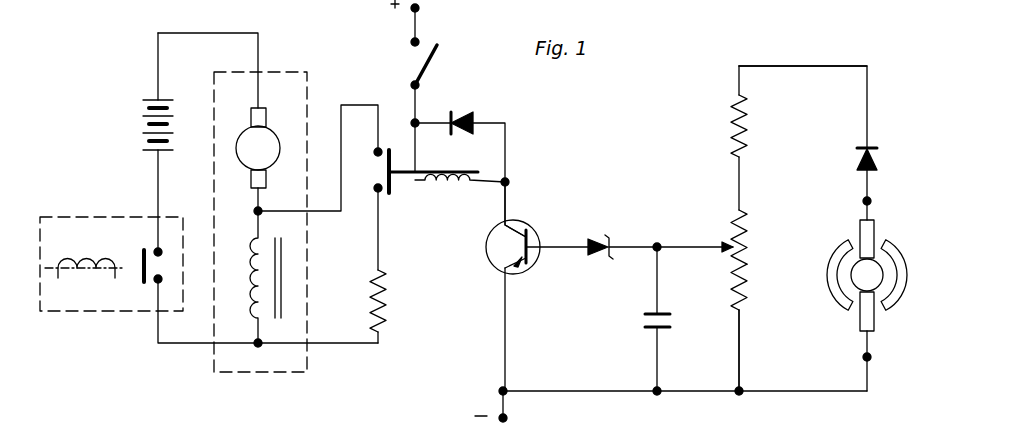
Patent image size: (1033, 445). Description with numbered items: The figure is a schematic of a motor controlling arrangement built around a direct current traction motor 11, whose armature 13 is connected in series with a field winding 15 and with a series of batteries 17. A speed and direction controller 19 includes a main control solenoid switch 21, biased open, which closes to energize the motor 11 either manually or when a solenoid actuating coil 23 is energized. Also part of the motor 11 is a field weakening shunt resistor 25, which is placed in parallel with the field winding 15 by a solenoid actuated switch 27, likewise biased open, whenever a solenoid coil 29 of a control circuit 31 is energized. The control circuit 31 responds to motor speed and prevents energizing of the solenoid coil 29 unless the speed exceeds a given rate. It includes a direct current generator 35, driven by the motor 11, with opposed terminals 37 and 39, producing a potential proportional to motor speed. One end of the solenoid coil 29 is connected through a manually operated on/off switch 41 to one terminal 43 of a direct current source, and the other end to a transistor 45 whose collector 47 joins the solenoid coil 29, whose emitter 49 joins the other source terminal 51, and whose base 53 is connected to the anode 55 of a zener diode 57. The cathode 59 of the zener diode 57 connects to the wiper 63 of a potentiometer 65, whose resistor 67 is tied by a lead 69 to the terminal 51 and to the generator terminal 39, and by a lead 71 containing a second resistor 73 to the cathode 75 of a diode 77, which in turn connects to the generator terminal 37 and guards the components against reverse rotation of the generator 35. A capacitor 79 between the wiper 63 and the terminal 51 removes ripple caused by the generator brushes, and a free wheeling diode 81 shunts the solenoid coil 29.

The direct current traction motor 11 is at (300, 72).
The armature 13 is at (266, 136).
The field winding 15 is at (268, 276).
The batteries 17 is at (143, 121).
The speed and direction controller 19 is at (122, 217).
The main control solenoid switch 21 is at (154, 285).
The solenoid actuating coil 23 is at (84, 258).
The field weakening shunt resistor 25 is at (390, 310).
The solenoid actuated switch 27 is at (394, 192).
The solenoid coil 29 is at (470, 165).
The control circuit 31 is at (622, 123).
The direct current generator 35 is at (905, 228).
The terminal 37 is at (862, 200).
The terminal 39 is at (873, 357).
The on/off switch 41 is at (424, 66).
The terminal 43 is at (420, 8).
The transistor 45 is at (480, 266).
The collector 47 is at (504, 228).
The emitter 49 is at (516, 272).
The terminal 51 is at (508, 418).
The base 53 is at (536, 237).
The anode 55 is at (598, 240).
The zener diode 57 is at (602, 258).
The cathode 59 is at (613, 238).
The wiper 63 is at (725, 240).
The potentiometer 65 is at (750, 258).
The resistor 67 is at (750, 290).
The lead 69 is at (741, 345).
The lead 71 is at (811, 66).
The second resistor 73 is at (752, 116).
The cathode 75 is at (858, 148).
The diode 77 is at (886, 158).
The capacitor 79 is at (635, 322).
The free wheeling diode 81 is at (468, 120).